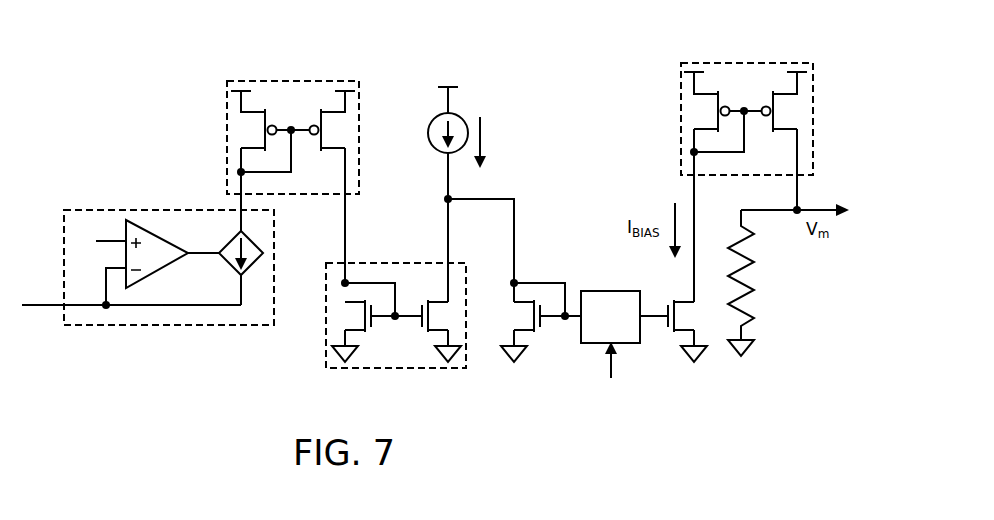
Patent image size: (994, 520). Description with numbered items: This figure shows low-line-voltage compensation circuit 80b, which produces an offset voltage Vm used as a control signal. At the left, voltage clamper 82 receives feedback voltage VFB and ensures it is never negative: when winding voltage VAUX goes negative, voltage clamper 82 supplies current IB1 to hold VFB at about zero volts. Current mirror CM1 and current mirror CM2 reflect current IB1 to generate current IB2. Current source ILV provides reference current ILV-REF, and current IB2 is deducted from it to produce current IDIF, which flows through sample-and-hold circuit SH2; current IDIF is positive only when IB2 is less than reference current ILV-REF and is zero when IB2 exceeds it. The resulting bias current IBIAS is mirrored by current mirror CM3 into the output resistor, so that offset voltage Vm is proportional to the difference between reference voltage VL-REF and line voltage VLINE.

The low-line-voltage compensation circuit 80b is at (137, 58).
The voltage clamper 82 is at (197, 327).
The current mirror CM1 is at (228, 132).
The current mirror CM2 is at (325, 319).
The current mirror CM3 is at (681, 98).
The current source ILV is at (428, 133).
The sample-and-hold circuit SH2 is at (597, 291).